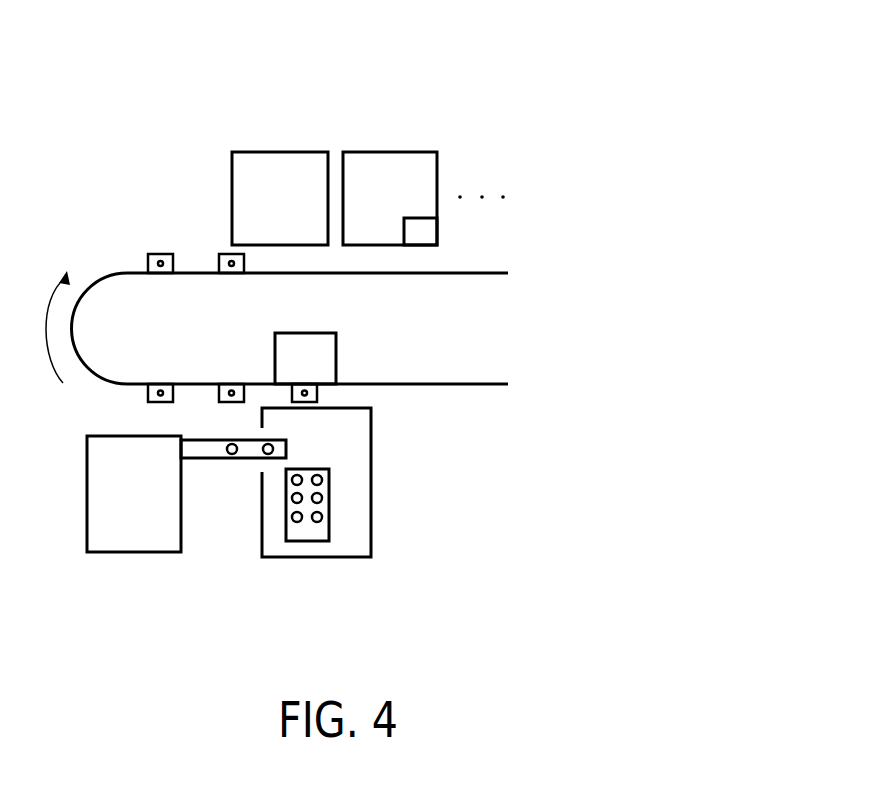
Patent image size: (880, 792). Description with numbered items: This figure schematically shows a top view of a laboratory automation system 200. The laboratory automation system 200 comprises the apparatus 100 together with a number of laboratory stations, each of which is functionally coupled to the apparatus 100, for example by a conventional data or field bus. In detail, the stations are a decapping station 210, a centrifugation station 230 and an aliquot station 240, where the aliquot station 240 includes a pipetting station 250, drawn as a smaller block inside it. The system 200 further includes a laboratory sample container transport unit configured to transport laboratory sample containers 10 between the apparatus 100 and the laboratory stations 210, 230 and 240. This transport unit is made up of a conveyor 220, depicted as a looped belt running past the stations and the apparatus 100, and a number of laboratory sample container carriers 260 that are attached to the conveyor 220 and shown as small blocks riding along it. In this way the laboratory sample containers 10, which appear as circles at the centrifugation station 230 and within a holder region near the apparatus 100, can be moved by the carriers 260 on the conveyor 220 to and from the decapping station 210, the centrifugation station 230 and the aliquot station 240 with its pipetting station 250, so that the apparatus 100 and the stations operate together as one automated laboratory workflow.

The laboratory automation system 200 is at (474, 82).
The decapping station 210 is at (301, 205).
The conveyor 220 is at (422, 388).
The centrifugation station 230 is at (154, 508).
The aliquot station 240 is at (411, 205).
The pipetting station 250 is at (425, 232).
The laboratory sample container carriers 260 is at (148, 262).
The apparatus 100 is at (327, 357).
The laboratory sample containers 10 is at (262, 457).